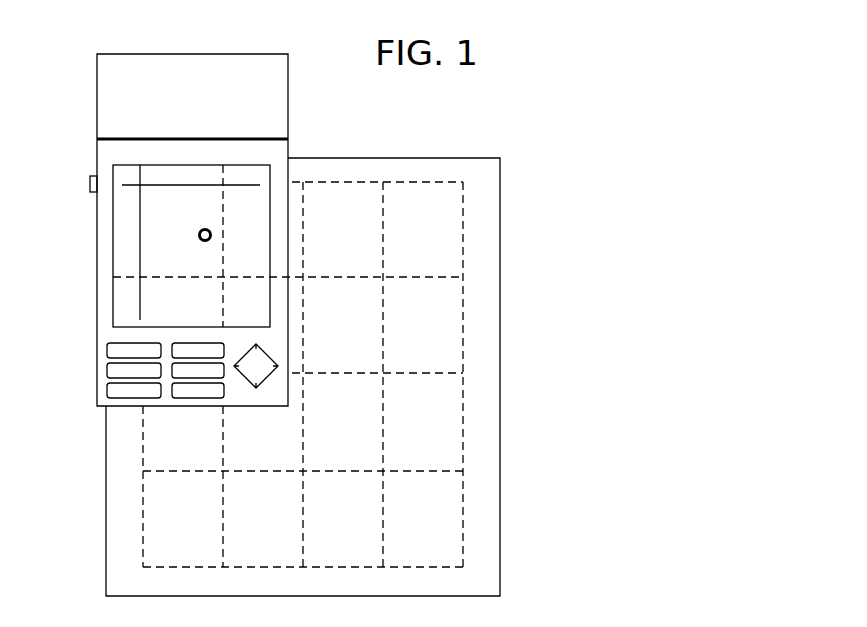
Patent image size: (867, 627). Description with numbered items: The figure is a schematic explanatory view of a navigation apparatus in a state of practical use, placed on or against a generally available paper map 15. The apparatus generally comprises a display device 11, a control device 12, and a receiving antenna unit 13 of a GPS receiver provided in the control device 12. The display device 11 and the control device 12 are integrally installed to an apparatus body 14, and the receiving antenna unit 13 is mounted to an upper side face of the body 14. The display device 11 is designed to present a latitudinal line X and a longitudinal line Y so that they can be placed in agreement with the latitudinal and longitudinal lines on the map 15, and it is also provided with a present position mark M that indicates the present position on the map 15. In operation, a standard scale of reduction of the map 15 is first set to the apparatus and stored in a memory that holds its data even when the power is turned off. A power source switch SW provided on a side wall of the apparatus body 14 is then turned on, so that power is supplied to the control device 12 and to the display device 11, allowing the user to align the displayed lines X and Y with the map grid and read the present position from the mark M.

The display device 11 is at (275, 185).
The control device 12 is at (97, 377).
The receiving antenna unit 13 is at (275, 113).
The apparatus body 14 is at (97, 277).
The paper map 15 is at (490, 336).
The latitudinal line X is at (147, 186).
The longitudinal line Y is at (140, 307).
The present position mark M is at (198, 235).
The power source switch SW is at (90, 183).